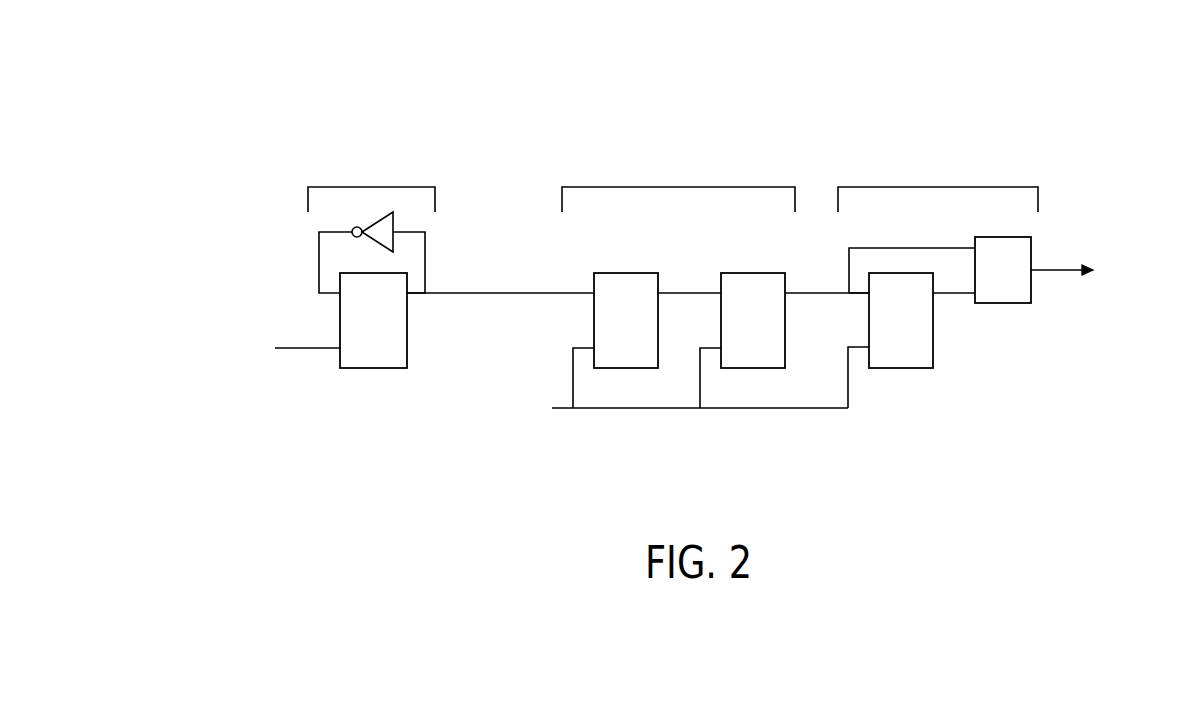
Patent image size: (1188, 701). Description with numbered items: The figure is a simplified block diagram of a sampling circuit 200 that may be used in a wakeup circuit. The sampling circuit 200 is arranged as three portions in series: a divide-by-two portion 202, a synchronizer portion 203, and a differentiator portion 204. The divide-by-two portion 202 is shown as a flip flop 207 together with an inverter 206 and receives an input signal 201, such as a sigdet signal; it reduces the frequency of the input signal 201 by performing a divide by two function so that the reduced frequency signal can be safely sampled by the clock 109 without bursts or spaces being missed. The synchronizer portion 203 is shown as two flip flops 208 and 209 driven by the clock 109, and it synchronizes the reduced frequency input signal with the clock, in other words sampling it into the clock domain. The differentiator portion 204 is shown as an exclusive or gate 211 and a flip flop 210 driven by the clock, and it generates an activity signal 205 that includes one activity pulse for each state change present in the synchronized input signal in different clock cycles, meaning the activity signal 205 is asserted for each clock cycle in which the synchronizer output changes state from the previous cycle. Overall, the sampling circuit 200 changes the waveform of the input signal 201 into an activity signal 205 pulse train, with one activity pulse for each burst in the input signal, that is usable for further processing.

The sampling circuit 200 is at (1058, 84).
The input signal 201 is at (240, 370).
The divide-by-two portion 202 is at (378, 153).
The synchronizer portion 203 is at (677, 153).
The differentiator portion 204 is at (947, 153).
The activity signal 205 is at (1150, 250).
The inverter 206 is at (393, 224).
The flip flop 207 is at (407, 345).
The flip flop 208 is at (630, 272).
The flip flop 209 is at (753, 272).
The flip flop 210 is at (937, 345).
The exclusive or gate 211 is at (1033, 245).
The clock 109 is at (517, 428).